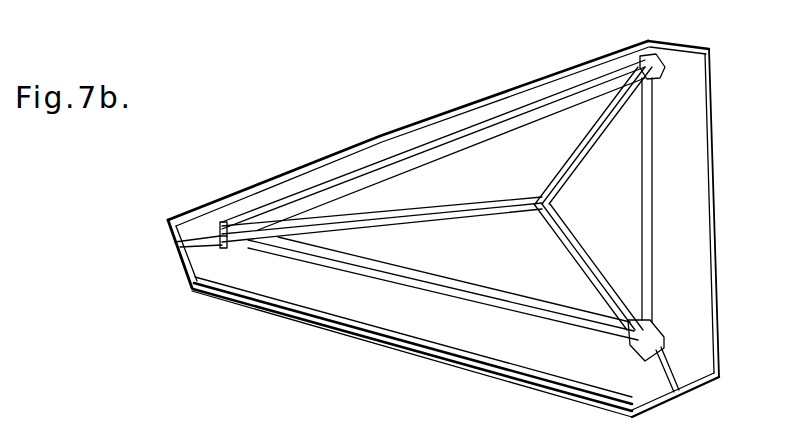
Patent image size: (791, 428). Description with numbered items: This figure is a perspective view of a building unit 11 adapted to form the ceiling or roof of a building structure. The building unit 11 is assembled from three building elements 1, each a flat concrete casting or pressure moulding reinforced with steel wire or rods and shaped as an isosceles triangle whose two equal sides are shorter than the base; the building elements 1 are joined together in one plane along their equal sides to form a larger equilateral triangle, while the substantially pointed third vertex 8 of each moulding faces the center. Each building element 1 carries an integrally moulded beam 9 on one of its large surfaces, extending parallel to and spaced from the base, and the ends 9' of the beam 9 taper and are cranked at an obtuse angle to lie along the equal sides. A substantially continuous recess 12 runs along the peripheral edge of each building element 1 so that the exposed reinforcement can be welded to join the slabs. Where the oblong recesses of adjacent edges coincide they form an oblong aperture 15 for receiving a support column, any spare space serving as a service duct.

The building element 1 is at (477, 120).
The third vertex 8 is at (570, 262).
The beam 9 is at (461, 212).
The ends of the beam 9' is at (224, 195).
The building unit 11 is at (262, 318).
The recess 12 is at (342, 222).
The oblong aperture 15 is at (647, 58).